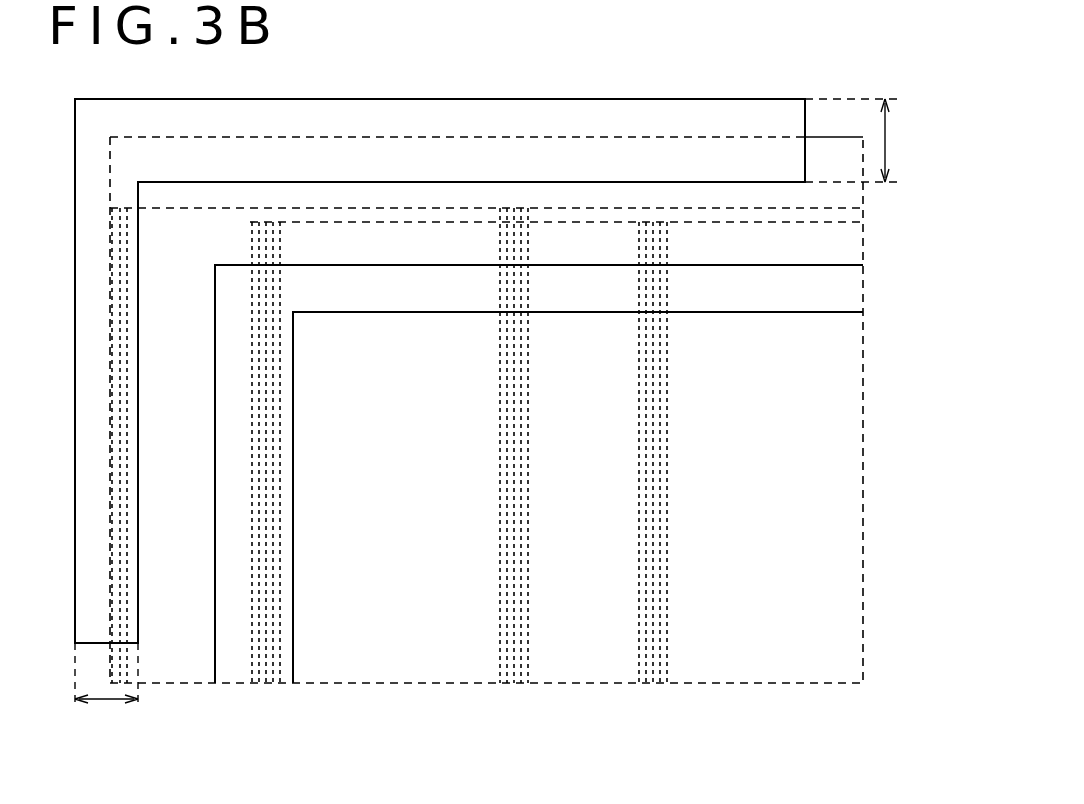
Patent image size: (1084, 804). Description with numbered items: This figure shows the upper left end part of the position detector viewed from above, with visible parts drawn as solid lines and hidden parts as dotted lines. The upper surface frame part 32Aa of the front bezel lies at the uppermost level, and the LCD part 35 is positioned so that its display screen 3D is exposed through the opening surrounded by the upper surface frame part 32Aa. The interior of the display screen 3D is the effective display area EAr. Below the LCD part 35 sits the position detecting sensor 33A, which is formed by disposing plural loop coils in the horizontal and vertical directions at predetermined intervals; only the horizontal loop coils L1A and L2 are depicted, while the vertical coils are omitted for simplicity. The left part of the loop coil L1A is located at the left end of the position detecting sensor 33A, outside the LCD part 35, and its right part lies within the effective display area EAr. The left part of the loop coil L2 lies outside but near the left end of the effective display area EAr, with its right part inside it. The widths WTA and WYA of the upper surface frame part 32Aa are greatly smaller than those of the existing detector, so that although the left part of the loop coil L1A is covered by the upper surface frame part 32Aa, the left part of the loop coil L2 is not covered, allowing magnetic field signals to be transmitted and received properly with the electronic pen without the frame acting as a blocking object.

The upper surface frame part 32Aa is at (467, 99).
The position detecting sensor 33A is at (583, 137).
The width of upper surface frame part in Y direction WYA is at (873, 140).
The loop coil L1A is at (165, 212).
The loop coil L2 is at (570, 223).
The LCD part 35 is at (750, 265).
The display screen 3D is at (763, 312).
The effective display area EAr is at (395, 675).
The width of upper surface frame part in X direction WTA is at (105, 701).